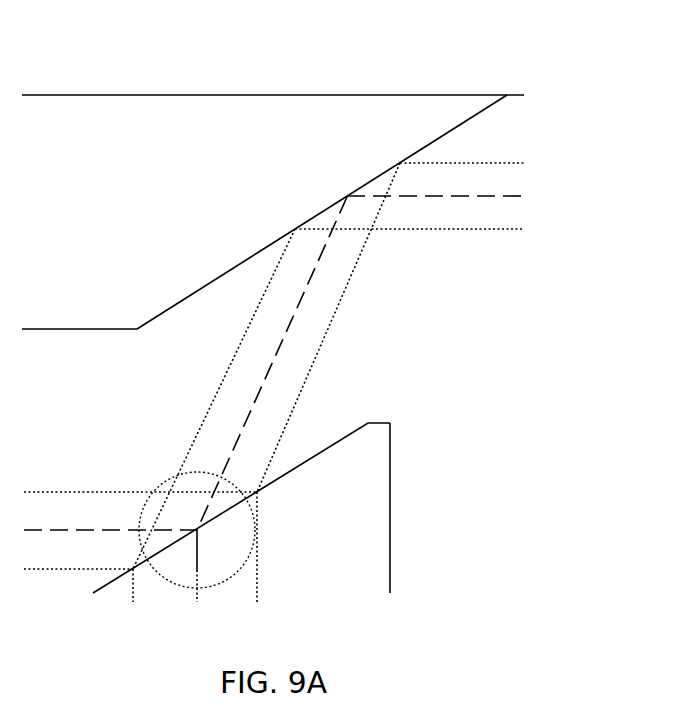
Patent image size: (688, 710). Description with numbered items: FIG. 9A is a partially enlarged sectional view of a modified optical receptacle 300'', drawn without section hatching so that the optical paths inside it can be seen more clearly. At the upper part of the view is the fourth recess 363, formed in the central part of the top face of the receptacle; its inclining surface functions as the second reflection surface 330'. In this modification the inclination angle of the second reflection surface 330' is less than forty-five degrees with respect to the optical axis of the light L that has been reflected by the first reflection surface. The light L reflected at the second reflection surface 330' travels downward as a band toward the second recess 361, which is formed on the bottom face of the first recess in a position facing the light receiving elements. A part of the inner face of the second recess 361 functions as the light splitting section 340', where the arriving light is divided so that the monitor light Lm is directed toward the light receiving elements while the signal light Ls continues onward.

The optical receptacle 300'' is at (329, 319).
The fourth recess 363 is at (127, 110).
The second reflection surface 330' is at (322, 174).
The light emitted from light emitting elements L is at (454, 230).
The monitor light Lm is at (315, 361).
The signal light Ls is at (92, 490).
The light splitting section 340' is at (299, 508).
The second recess 361 is at (350, 570).